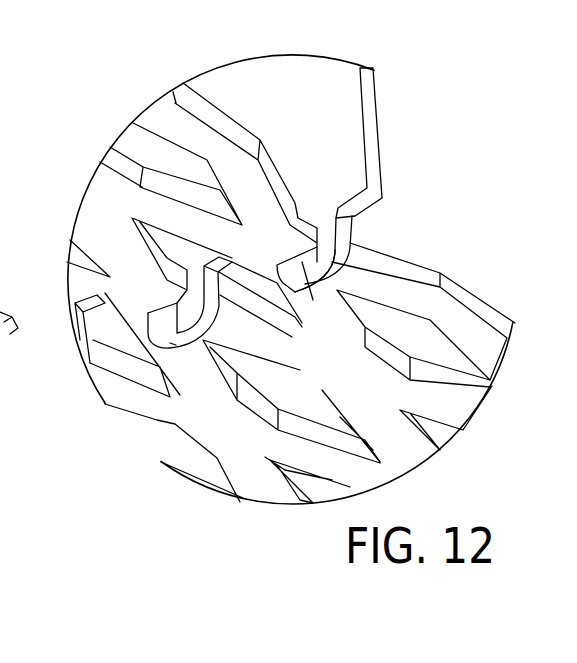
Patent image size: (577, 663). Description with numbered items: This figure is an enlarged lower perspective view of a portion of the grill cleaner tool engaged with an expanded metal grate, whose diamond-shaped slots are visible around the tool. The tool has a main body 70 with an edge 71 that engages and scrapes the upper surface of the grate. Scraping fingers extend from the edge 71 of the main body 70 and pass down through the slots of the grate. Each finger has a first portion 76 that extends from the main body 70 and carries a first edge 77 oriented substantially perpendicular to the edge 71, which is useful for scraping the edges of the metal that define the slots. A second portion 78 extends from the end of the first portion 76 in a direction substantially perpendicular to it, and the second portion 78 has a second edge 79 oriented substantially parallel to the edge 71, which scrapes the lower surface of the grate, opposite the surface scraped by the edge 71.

The main body 70 is at (330, 124).
The edge 71 is at (363, 220).
The first portion 76 is at (312, 235).
The first edge 77 is at (175, 278).
The second portion 78 is at (302, 262).
The second edge 79 is at (175, 335).